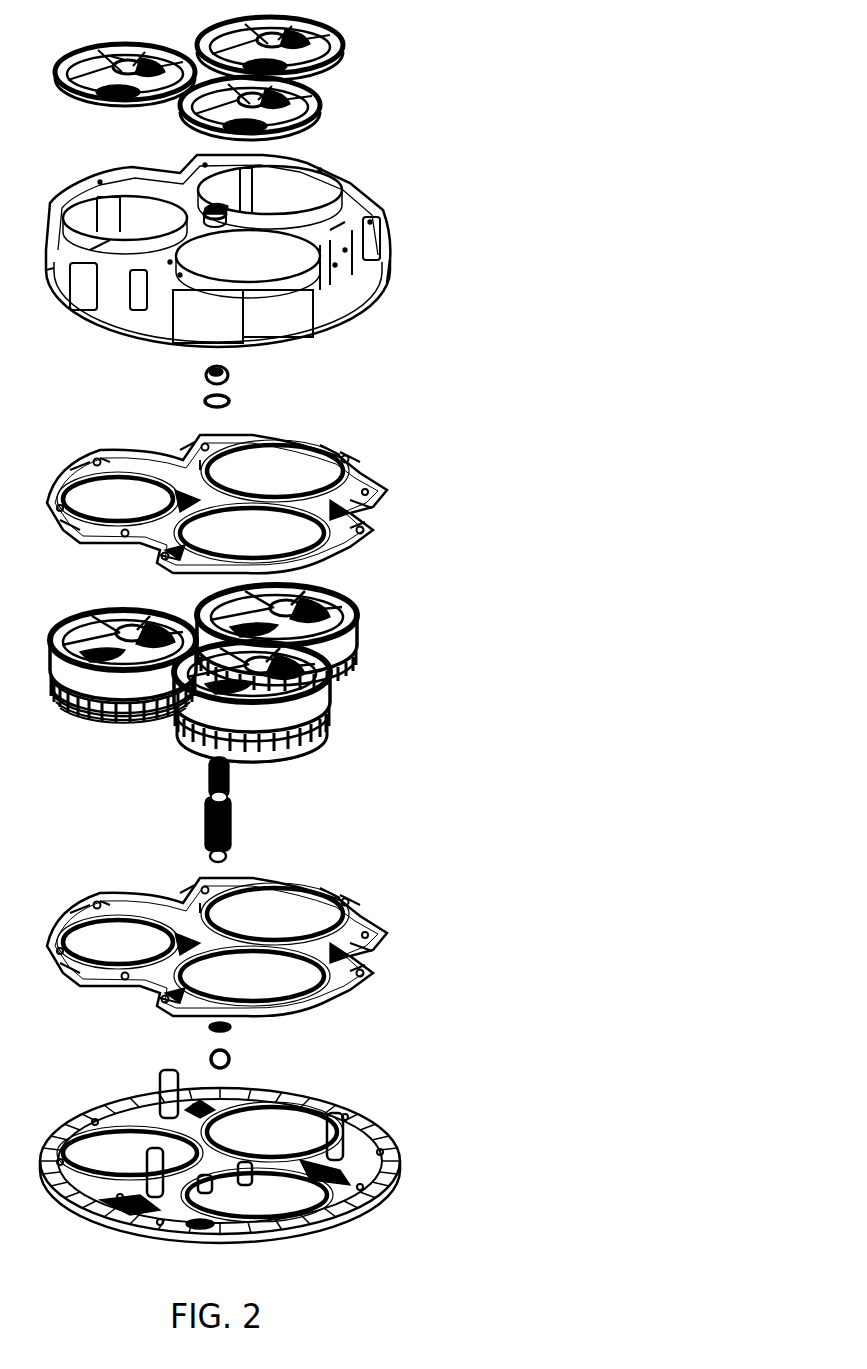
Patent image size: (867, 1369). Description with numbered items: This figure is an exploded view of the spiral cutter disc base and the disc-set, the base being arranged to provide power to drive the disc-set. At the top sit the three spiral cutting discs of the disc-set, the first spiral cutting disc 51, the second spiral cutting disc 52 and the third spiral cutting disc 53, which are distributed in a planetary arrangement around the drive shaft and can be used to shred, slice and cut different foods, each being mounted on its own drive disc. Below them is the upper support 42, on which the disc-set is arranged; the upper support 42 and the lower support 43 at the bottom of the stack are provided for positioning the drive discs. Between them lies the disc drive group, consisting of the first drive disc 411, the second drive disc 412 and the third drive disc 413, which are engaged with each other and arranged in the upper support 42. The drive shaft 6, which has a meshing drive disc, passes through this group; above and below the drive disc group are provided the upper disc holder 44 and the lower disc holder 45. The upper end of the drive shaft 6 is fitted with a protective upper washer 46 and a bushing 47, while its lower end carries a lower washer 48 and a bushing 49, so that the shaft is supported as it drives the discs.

The first spiral cutting disc 51 is at (302, 25).
The second spiral cutting disc 52 is at (333, 87).
The third spiral cutting disc 53 is at (65, 63).
The upper support 42 is at (340, 280).
The bushing 47 is at (227, 370).
The upper washer 46 is at (229, 403).
The upper disc holder 44 is at (357, 520).
The first drive disc 411 is at (362, 608).
The second drive disc 412 is at (345, 700).
The third drive disc 413 is at (75, 708).
The drive shaft 6 is at (237, 820).
The lower disc holder 45 is at (385, 920).
The bushing 49 is at (231, 1026).
The lower washer 48 is at (230, 1060).
The lower support 43 is at (383, 1142).